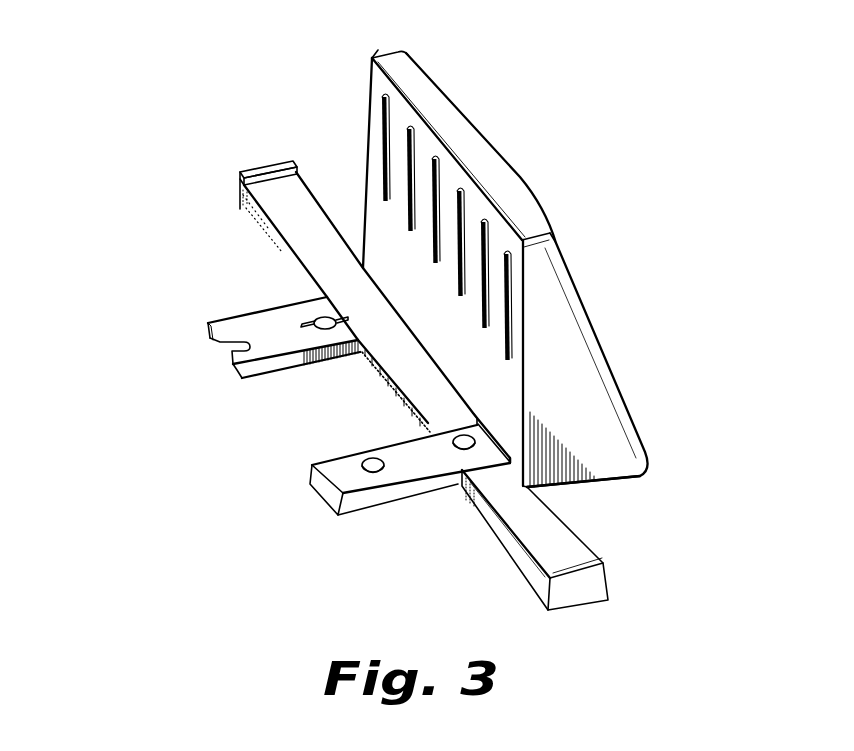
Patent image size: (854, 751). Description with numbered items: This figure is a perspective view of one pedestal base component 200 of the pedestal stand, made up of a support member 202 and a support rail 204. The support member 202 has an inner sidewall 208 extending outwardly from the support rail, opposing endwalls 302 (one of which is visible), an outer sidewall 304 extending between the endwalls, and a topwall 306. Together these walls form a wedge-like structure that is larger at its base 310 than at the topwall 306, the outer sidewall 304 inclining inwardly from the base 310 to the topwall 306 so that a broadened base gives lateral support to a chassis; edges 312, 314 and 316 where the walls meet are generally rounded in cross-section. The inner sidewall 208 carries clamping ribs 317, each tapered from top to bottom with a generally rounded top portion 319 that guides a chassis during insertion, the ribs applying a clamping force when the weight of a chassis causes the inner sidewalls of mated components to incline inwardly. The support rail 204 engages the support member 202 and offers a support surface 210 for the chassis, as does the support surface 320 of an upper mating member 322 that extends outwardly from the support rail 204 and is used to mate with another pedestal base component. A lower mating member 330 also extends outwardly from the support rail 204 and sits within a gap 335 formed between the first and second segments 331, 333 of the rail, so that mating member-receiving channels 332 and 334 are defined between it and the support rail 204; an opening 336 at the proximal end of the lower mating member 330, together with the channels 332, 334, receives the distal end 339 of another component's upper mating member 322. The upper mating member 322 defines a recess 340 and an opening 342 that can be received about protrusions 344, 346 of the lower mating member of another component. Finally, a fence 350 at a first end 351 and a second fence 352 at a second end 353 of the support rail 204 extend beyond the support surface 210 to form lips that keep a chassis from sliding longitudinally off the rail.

The pedestal base component 200 is at (162, 169).
The support member 202 is at (484, 157).
The support rail 204 is at (537, 549).
The inner sidewall 208 is at (380, 230).
The support surface 210 is at (380, 378).
The endwall 302 is at (552, 335).
The outer sidewall 304 is at (567, 250).
The topwall 306 is at (437, 100).
The base 310 is at (570, 487).
The edge 312 is at (540, 188).
The edge 314 is at (553, 233).
The edge 316 is at (643, 430).
The clamping rib 317 is at (505, 312).
The rounded top portion 319 is at (380, 90).
The support surface 320 is at (272, 327).
The upper mating member 322 is at (207, 327).
The lower mating member 330 is at (323, 457).
The first segment 331 is at (283, 206).
The mating member-receiving channel 332 is at (437, 418).
The second segment 333 is at (490, 508).
The mating member-receiving channel 334 is at (462, 474).
The gap 335 is at (508, 415).
The opening 336 is at (474, 408).
The distal end 339 is at (233, 362).
The recess 340 is at (232, 347).
The opening 342 is at (332, 318).
The protrusion 344 is at (362, 470).
The protrusion 346 is at (458, 443).
The fence 350 is at (580, 572).
The first end 351 is at (580, 595).
The second fence 352 is at (268, 165).
The second end 353 is at (242, 184).